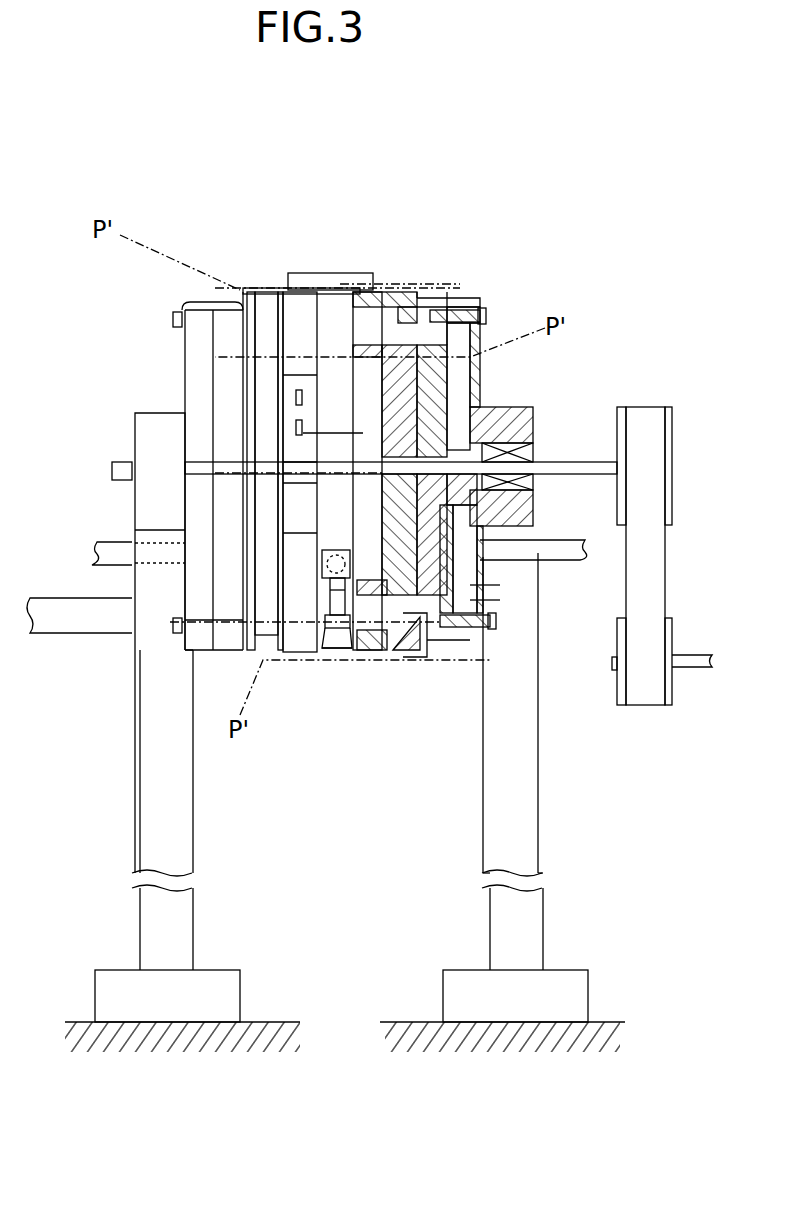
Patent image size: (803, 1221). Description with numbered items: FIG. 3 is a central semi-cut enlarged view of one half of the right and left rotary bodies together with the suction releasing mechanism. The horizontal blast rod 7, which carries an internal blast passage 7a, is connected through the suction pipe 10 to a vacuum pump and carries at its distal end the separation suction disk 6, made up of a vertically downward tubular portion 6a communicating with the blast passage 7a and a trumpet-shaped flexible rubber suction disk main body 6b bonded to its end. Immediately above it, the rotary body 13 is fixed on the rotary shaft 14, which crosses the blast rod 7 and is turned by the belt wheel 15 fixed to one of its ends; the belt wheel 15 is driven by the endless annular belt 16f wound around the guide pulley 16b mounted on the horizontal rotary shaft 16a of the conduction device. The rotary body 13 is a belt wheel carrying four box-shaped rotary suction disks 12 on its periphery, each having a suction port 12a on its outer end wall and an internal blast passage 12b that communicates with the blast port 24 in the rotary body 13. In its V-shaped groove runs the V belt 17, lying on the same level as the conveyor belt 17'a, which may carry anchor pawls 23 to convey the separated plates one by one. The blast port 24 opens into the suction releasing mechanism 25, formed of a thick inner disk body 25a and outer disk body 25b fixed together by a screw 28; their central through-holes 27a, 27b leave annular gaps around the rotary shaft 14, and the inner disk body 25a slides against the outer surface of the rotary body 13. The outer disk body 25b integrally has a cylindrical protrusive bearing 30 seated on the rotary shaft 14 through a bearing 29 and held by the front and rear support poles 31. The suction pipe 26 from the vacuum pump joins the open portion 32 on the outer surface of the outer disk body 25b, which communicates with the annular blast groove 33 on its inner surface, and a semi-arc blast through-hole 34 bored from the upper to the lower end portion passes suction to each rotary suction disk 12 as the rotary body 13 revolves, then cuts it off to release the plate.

The separation suction disk 6 is at (338, 648).
The tubular portion 6a is at (330, 590).
The suction disk main body 6b is at (335, 652).
The blast rod 7 is at (333, 548).
The blast passage 7a is at (345, 565).
The suction pipe 10 is at (52, 618).
The rotary suction disk 12 is at (295, 303).
The suction port 12a is at (350, 665).
The internal blast passage 12b is at (392, 660).
The rotary body 13 is at (273, 305).
The rotary shaft 14 is at (112, 470).
The belt wheel 15 is at (668, 425).
The rotary shaft 16a is at (690, 668).
The guide pulley 16b is at (625, 705).
The endless annular belt 16f is at (648, 553).
The V belt 17 is at (319, 237).
The conveyor belt 17'a is at (337, 216).
The anchor pawl 23 is at (340, 285).
The blast port 24 is at (412, 630).
The suction releasing mechanism 25 is at (215, 300).
The inner disk body 25a is at (465, 310).
The outer disk body 25b is at (478, 390).
The suction pipe 26 is at (97, 548).
The through-hole 27a is at (432, 447).
The through-hole 27b is at (490, 432).
The screw 28 is at (486, 316).
The bearing 29 is at (533, 487).
The cylindrical protrusive bearing 30 is at (150, 420).
The support pole 31 is at (180, 910).
The open portion 32 is at (480, 596).
The annular blast groove 33 is at (478, 610).
The semi-arc blast through-hole 34 is at (440, 655).